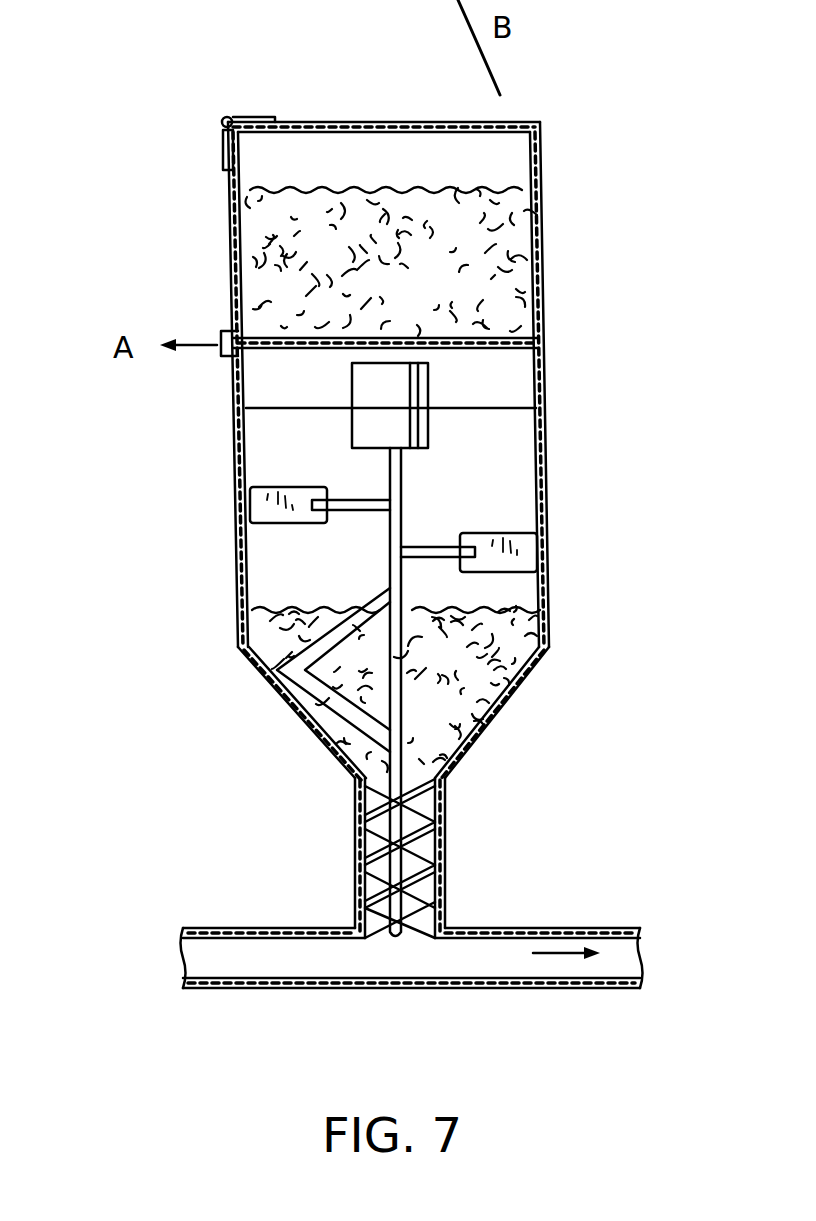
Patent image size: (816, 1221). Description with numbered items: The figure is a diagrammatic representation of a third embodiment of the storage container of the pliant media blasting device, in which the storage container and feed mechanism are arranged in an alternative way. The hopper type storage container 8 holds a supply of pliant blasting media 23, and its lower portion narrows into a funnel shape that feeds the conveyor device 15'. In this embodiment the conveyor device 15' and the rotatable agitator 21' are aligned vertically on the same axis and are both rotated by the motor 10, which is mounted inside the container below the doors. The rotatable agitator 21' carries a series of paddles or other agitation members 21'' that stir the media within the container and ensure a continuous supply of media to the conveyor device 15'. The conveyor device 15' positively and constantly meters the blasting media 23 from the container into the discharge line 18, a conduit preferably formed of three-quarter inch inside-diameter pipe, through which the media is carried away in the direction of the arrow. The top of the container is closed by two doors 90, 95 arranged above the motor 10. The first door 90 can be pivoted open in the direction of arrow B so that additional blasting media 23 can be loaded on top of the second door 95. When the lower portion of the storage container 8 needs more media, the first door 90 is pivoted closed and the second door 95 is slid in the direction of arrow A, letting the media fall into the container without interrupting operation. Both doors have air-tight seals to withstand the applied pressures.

The first door 90 is at (517, 122).
The second door 95 is at (512, 340).
The blasting media 23 is at (395, 290).
The motor 10 is at (428, 420).
The agitation members 21'' is at (260, 510).
The rotatable agitator 21' is at (402, 562).
The storage container 8 is at (548, 572).
The conveyor device 15' is at (456, 858).
The discharge line 18 is at (508, 990).